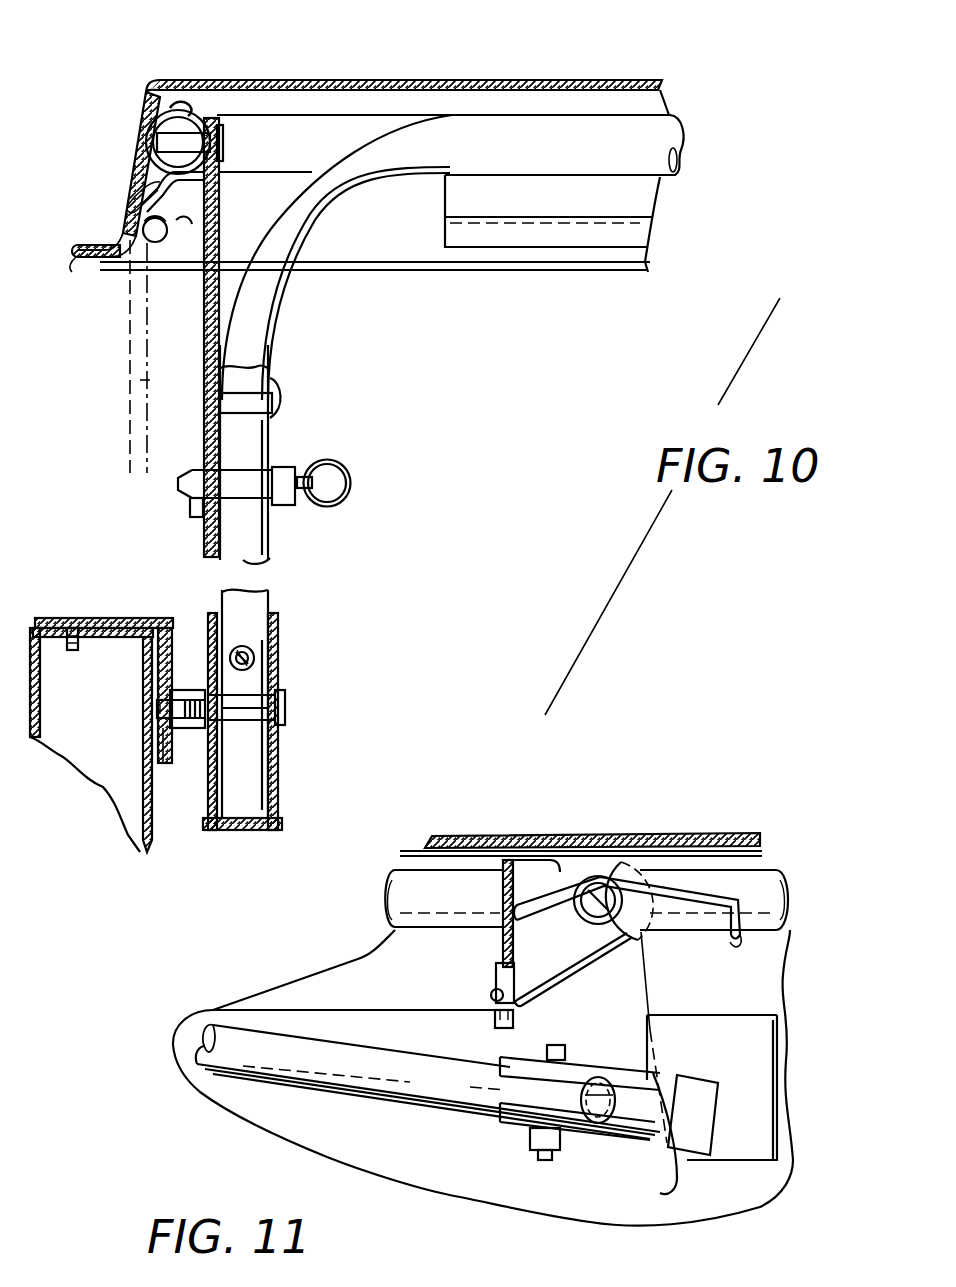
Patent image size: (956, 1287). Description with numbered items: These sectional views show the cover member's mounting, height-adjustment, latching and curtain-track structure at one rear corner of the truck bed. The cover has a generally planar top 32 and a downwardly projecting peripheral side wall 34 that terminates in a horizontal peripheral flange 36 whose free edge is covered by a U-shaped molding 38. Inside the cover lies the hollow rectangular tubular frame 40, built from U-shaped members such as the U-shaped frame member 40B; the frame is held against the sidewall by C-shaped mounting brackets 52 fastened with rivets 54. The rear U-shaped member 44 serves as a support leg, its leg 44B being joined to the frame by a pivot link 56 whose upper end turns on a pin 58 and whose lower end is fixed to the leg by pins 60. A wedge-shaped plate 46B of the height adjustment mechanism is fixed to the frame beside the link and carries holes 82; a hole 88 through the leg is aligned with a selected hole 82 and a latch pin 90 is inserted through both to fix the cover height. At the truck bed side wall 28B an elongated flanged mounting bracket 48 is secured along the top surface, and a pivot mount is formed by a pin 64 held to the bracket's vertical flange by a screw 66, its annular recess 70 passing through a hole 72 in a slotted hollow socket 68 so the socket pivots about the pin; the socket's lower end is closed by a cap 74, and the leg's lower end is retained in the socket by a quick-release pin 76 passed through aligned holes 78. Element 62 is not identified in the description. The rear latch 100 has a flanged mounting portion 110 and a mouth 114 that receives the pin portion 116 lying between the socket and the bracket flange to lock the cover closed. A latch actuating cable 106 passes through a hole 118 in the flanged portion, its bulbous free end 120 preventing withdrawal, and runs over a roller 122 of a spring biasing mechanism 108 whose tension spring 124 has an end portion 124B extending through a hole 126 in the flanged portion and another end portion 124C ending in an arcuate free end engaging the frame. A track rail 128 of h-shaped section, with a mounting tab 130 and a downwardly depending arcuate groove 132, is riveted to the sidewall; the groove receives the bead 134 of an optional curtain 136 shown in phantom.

In FIG. 10, the truck bed side wall 28B is at (62, 788).
In FIG. 11, the truck bed side wall 28B is at (760, 1192).
In FIG. 10, the planar top 32 is at (462, 80).
In FIG. 11, the planar top 32 is at (710, 834).
In FIG. 10, the peripheral side wall 34 is at (140, 118).
In FIG. 11, the peripheral side wall 34 is at (760, 990).
In FIG. 10, the peripheral flange 36 is at (92, 266).
In FIG. 10, the U-shaped molding 38 is at (78, 252).
In FIG. 10, the frame 40 is at (302, 140).
In FIG. 11, the frame 40 is at (755, 870).
In FIG. 10, the U-shaped frame member 40B is at (150, 110).
In FIG. 10, the rear U-shaped member 44 is at (663, 130).
In FIG. 10, the leg 44B is at (237, 555).
In FIG. 11, the leg 44B is at (237, 1072).
In FIG. 10, the wedge-shaped plate 46B is at (205, 400).
In FIG. 10, the mounting bracket 48 is at (98, 618).
In FIG. 11, the mounting bracket 48 is at (763, 1043).
In FIG. 10, the C-shaped mounting bracket 52 is at (173, 110).
In FIG. 10, the rivet 54 is at (128, 197).
In FIG. 10, the pivot link 56 is at (262, 310).
In FIG. 10, the pin 58 is at (222, 143).
In FIG. 10, the pin 60 is at (282, 395).
In FIG. 10, the angle plate 62 is at (72, 618).
In FIG. 10, the pin 64 is at (189, 688).
In FIG. 10, the screw 66 is at (155, 706).
In FIG. 10, the socket 68 is at (282, 678).
In FIG. 11, the socket 68 is at (636, 1086).
In FIG. 10, the annular recess 70 is at (250, 720).
In FIG. 11, the annular recess 70 is at (594, 1108).
In FIG. 10, the hole 72 is at (286, 740).
In FIG. 11, the hole 72 is at (602, 1118).
In FIG. 10, the cap 74 is at (238, 833).
In FIG. 11, the cap 74 is at (700, 1113).
In FIG. 10, the quick-release pin 76 is at (254, 660).
In FIG. 11, the quick-release pin 76 is at (520, 1142).
In FIG. 10, the hole 78 is at (250, 653).
In FIG. 10, the hole 82 is at (196, 492).
In FIG. 10, the hole 88 is at (288, 458).
In FIG. 10, the latch pin 90 is at (352, 478).
In FIG. 11, the rear latch 100 is at (680, 1195).
In FIG. 11, the latch actuating cable 106 is at (406, 850).
In FIG. 11, the spring biasing mechanism 108 is at (636, 932).
In FIG. 11, the flanged mounting portion 110 is at (502, 942).
In FIG. 11, the mouth 114 is at (520, 1068).
In FIG. 10, the pin portion 116 is at (174, 748).
In FIG. 11, the hole 118 is at (492, 990).
In FIG. 11, the free end 120 is at (492, 1013).
In FIG. 11, the roller 122 is at (568, 866).
In FIG. 11, the tension spring 124 is at (670, 882).
In FIG. 11, the spring end portion 124B is at (496, 966).
In FIG. 11, the spring end portion 124C is at (780, 947).
In FIG. 11, the hole 126 is at (497, 976).
In FIG. 10, the track rail 128 is at (184, 224).
In FIG. 10, the mounting tab 130 is at (635, 197).
In FIG. 10, the arcuate groove 132 is at (632, 247).
In FIG. 10, the bead 134 is at (130, 318).
In FIG. 10, the curtain 136 is at (148, 377).